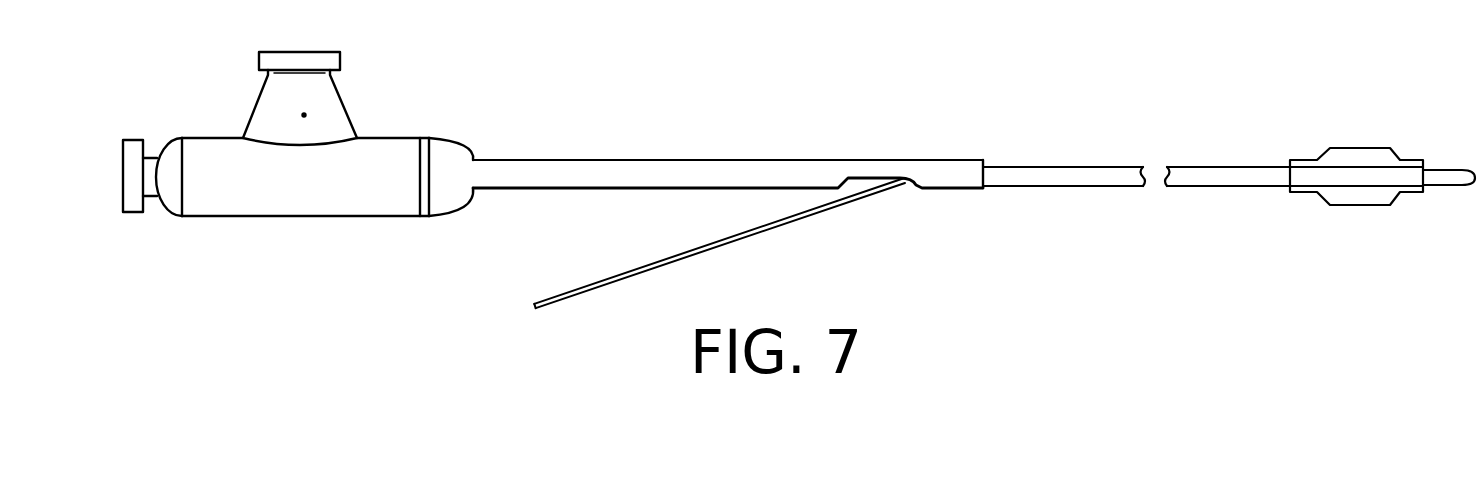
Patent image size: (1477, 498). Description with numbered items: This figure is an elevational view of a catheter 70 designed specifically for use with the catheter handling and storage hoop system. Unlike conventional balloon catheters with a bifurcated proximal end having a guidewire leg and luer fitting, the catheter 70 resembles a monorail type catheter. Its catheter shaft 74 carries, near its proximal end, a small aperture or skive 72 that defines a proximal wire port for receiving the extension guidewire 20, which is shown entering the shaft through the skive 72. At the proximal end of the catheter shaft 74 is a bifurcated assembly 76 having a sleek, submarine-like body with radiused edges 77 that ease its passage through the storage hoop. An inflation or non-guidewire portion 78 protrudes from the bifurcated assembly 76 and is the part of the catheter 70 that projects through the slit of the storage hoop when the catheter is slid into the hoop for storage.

The bifurcated assembly 76 is at (258, 219).
The inflation portion 78 is at (332, 92).
The radiused edges 77 is at (457, 142).
The skive 72 is at (865, 180).
The catheter shaft 74 is at (930, 190).
The extension guidewire 20 is at (800, 225).
The catheter 70 is at (1090, 188).